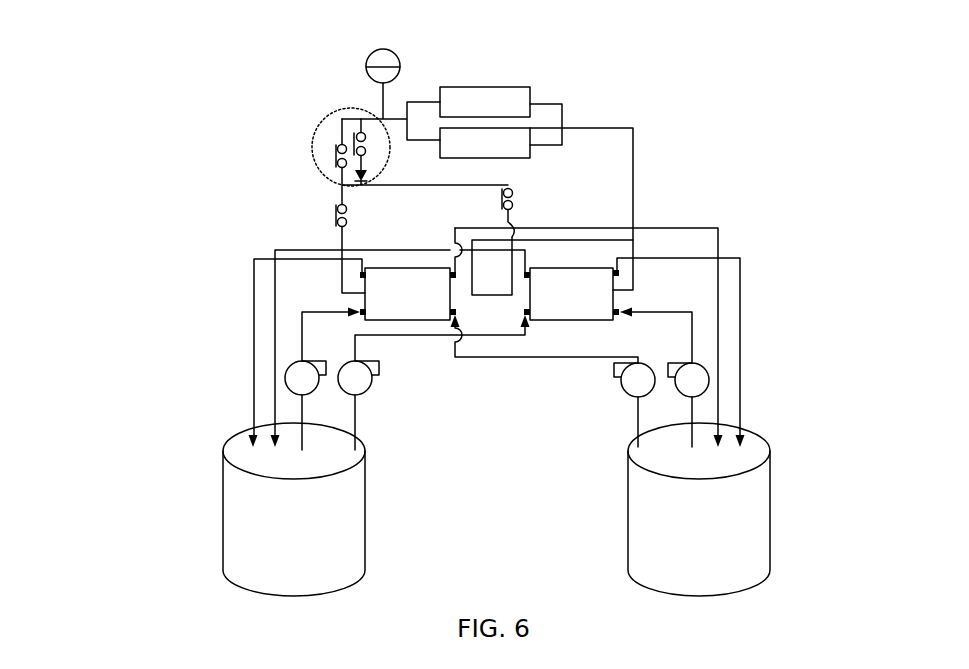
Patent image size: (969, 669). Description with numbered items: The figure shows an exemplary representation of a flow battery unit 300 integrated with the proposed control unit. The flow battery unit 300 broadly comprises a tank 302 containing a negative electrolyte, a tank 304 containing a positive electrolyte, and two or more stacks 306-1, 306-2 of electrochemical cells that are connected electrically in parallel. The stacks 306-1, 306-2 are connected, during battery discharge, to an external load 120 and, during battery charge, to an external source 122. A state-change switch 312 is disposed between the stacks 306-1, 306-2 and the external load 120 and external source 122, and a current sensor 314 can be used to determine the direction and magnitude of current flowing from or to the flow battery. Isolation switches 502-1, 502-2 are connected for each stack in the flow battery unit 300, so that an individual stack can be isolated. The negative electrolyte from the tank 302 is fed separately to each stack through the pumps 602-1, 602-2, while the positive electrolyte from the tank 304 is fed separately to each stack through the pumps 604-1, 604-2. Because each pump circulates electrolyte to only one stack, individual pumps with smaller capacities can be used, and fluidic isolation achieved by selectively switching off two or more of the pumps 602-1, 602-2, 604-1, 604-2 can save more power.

The flow battery unit 300 is at (134, 48).
The current sensor 314 is at (410, 60).
The external source 122 is at (541, 83).
The external load 120 is at (541, 124).
The state-change switch 312 is at (303, 137).
The isolation switch 502-1 is at (326, 208).
The isolation switch 502-2 is at (524, 190).
The stack 306-1 is at (382, 292).
The stack 306-2 is at (608, 281).
The pump 602-1 is at (273, 376).
The pump 602-2 is at (328, 394).
The pump 604-1 is at (720, 382).
The pump 604-2 is at (668, 396).
The tank 302 is at (211, 514).
The tank 304 is at (782, 504).